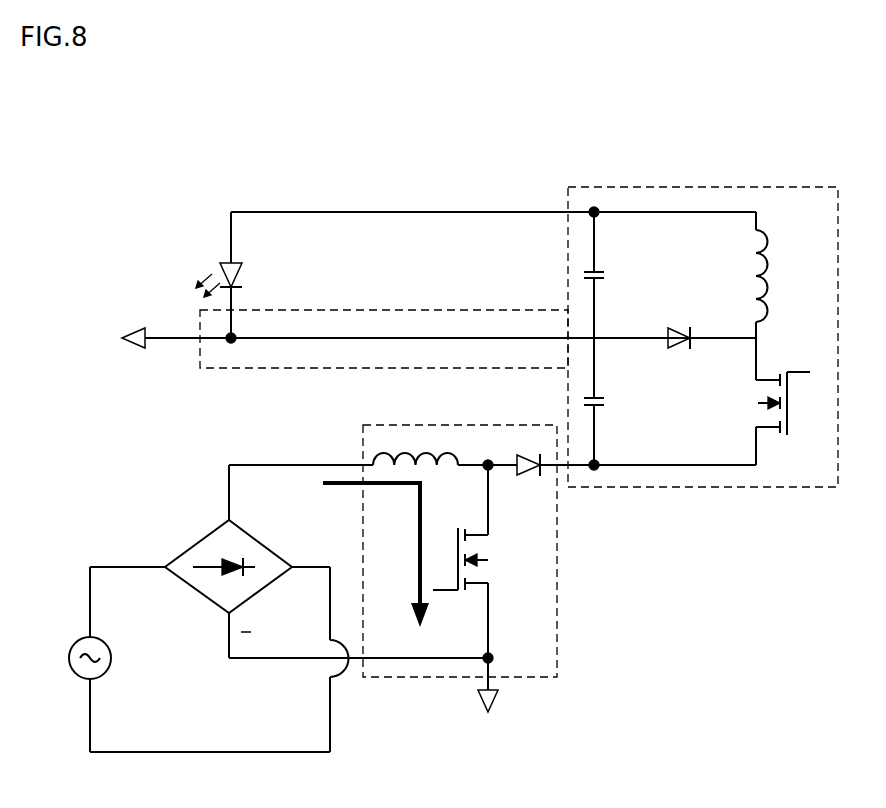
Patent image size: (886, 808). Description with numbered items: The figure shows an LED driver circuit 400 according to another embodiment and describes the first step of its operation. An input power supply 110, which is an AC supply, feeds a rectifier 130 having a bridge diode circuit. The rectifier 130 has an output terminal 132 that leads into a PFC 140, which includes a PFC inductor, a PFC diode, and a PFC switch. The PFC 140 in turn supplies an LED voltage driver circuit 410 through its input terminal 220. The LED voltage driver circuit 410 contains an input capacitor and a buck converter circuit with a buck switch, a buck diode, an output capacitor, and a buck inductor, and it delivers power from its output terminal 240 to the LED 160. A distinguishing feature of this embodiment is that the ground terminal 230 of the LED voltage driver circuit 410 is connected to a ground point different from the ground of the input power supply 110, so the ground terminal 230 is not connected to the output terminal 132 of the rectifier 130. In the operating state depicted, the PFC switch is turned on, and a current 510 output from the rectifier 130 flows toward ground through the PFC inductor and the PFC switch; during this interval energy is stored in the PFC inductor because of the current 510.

The LED driver circuit 400 is at (134, 123).
The LED voltage driver circuit 410 is at (690, 185).
The output terminal 240 is at (594, 208).
The LED 160 is at (213, 256).
The ground terminal 230 is at (232, 343).
The input terminal 220 is at (594, 471).
The output terminal of a rectifier 132 is at (225, 462).
The rectifier 130 is at (200, 540).
The input power supply 110 is at (78, 642).
The PFC 140 is at (558, 640).
The current 510 is at (420, 577).